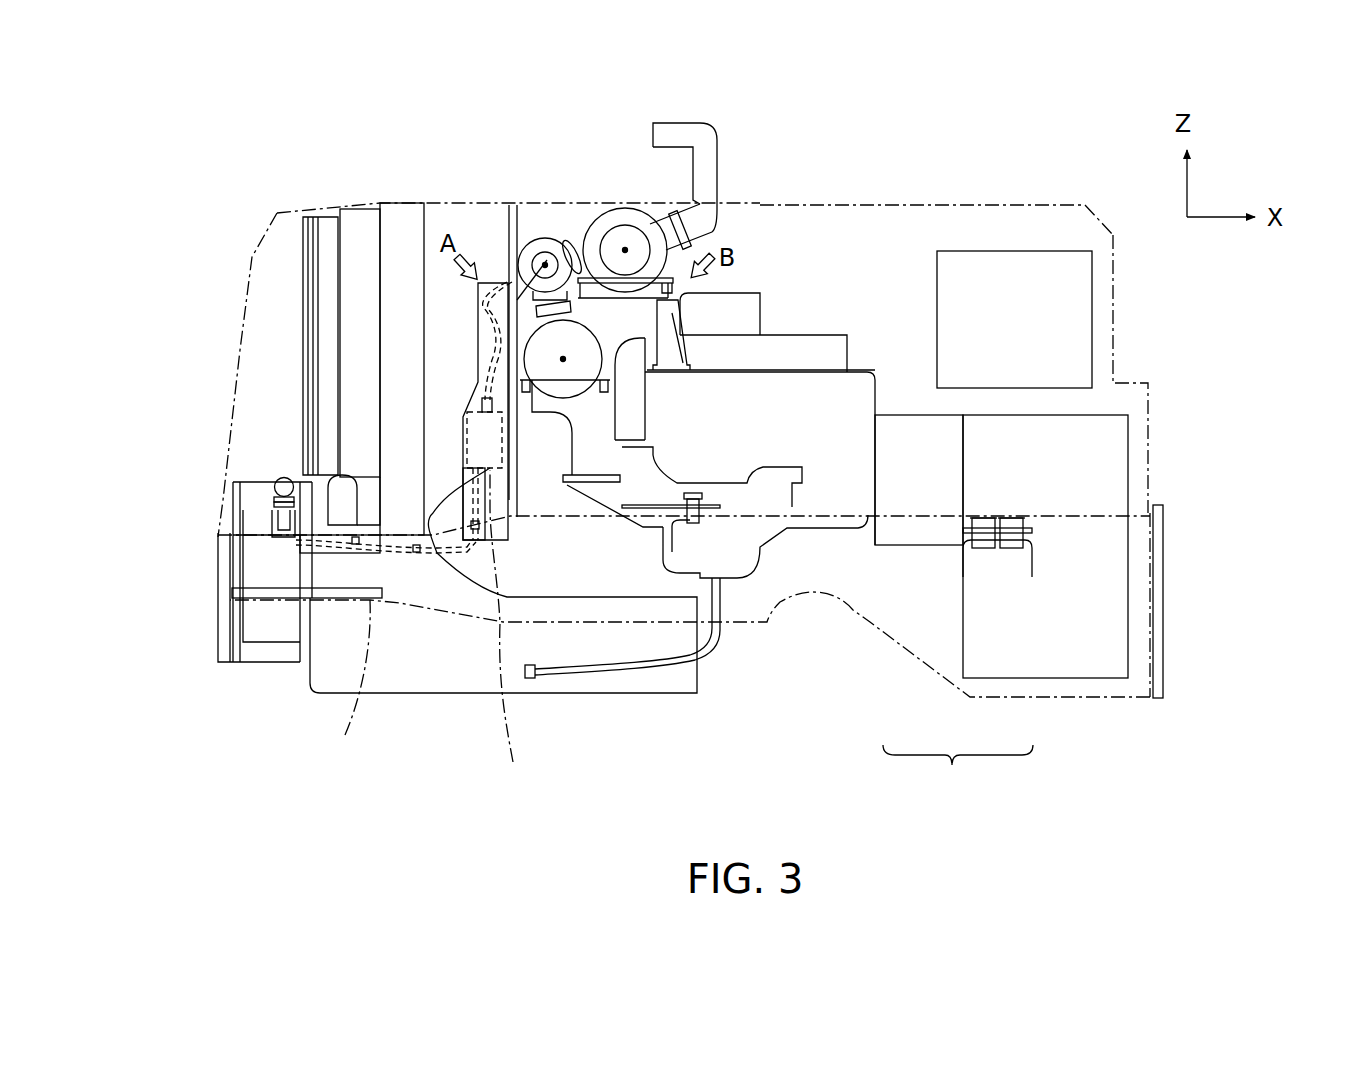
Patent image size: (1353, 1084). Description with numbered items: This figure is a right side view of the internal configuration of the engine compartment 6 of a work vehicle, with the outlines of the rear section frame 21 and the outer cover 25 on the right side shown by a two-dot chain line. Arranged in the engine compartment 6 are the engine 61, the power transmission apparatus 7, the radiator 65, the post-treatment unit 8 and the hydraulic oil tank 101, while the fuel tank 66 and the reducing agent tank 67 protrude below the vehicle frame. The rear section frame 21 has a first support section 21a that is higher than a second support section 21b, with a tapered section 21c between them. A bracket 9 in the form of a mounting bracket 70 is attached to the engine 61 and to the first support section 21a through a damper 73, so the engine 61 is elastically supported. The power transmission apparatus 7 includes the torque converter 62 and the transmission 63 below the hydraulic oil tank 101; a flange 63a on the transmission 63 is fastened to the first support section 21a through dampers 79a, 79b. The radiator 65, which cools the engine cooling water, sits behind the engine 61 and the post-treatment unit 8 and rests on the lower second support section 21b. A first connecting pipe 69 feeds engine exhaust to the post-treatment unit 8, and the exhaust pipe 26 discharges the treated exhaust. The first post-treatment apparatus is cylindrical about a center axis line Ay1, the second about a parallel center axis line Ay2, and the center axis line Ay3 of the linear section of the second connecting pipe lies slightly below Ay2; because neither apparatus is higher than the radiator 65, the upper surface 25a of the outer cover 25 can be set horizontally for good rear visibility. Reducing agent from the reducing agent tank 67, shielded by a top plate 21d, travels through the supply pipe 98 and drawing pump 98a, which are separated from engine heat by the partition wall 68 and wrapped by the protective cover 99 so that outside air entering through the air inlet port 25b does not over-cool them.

The engine compartment 6 is at (789, 287).
The power transmission apparatus 7 is at (958, 774).
The post-treatment unit 8 is at (569, 222).
The bracket 9 is at (648, 542).
The rear section frame 21 is at (858, 622).
The first support section 21a is at (1135, 495).
The second support section 21b is at (342, 683).
The tapered section 21c is at (498, 629).
The top plate 21d is at (255, 487).
The outer cover 25 is at (1113, 278).
The upper surface 25a is at (945, 206).
The air inlet port 25b is at (472, 200).
The exhaust pipe 26 is at (697, 137).
The engine 61 is at (810, 405).
The torque converter 62 is at (903, 530).
The transmission 63 is at (1000, 628).
The flange 63a is at (1040, 535).
The radiator 65 is at (405, 265).
The fuel tank 66 is at (330, 668).
The reducing agent tank 67 is at (263, 620).
The partition wall 68 is at (512, 285).
The first connecting pipe 69 is at (667, 313).
The mounting bracket 70 is at (775, 490).
The damper 73 is at (690, 530).
The damper 79a is at (1010, 550).
The damper 79b is at (985, 550).
The supply pipe 98 is at (472, 545).
The drawing pump 98a is at (480, 470).
The protective cover 99 is at (475, 528).
The hydraulic oil tank 101 is at (1017, 280).
The center axis line Ay1 is at (545, 263).
The center axis line Ay2 is at (625, 250).
The center axis line Ay3 is at (537, 255).